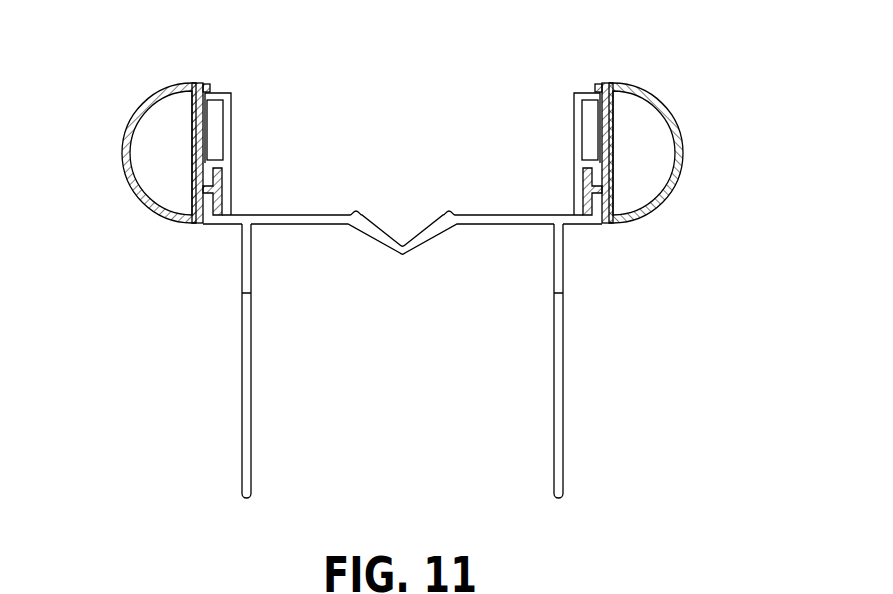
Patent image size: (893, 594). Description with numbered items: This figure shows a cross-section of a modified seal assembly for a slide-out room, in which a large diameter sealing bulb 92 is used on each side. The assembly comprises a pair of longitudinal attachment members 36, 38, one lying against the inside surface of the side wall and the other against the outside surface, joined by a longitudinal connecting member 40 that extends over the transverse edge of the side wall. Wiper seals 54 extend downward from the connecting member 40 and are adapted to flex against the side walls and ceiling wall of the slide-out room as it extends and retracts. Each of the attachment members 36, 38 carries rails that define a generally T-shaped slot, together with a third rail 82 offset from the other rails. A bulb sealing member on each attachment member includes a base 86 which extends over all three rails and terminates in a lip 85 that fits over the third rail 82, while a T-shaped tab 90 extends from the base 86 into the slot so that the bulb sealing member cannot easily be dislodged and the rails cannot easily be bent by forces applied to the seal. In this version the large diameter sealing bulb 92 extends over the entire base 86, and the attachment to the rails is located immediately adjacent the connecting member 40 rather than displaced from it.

The attachment member 36 is at (240, 128).
The attachment member 38 is at (562, 130).
The connecting member 40 is at (300, 216).
The wiper seals 54 is at (553, 428).
The third rail 82 is at (229, 93).
The lip 85 is at (205, 84).
The base 86 is at (192, 166).
The T-shaped tab 90 is at (218, 177).
The large diameter sealing bulb 92 is at (122, 146).